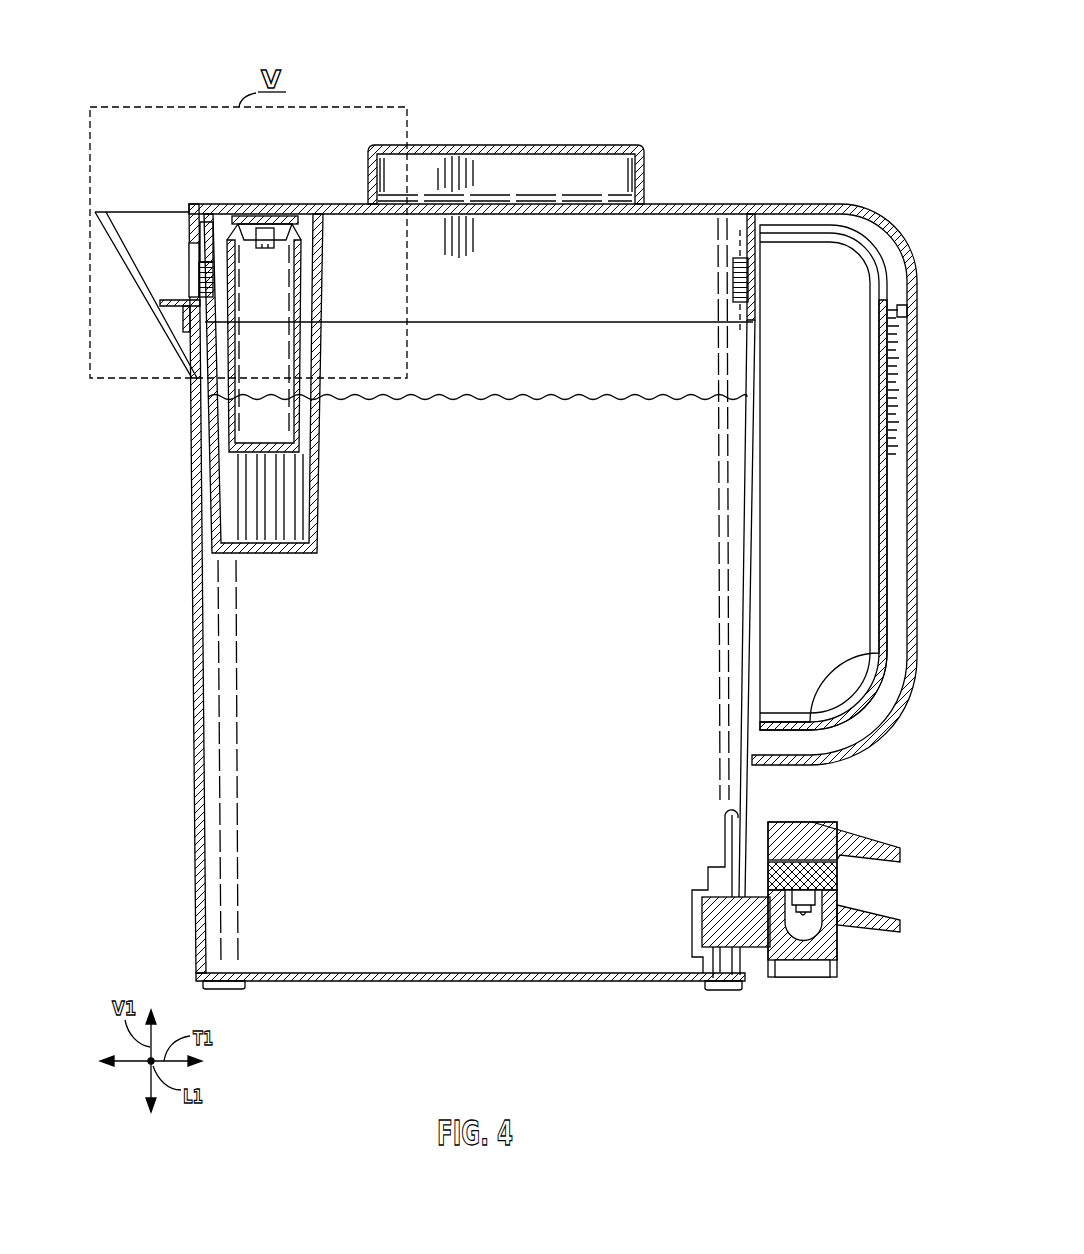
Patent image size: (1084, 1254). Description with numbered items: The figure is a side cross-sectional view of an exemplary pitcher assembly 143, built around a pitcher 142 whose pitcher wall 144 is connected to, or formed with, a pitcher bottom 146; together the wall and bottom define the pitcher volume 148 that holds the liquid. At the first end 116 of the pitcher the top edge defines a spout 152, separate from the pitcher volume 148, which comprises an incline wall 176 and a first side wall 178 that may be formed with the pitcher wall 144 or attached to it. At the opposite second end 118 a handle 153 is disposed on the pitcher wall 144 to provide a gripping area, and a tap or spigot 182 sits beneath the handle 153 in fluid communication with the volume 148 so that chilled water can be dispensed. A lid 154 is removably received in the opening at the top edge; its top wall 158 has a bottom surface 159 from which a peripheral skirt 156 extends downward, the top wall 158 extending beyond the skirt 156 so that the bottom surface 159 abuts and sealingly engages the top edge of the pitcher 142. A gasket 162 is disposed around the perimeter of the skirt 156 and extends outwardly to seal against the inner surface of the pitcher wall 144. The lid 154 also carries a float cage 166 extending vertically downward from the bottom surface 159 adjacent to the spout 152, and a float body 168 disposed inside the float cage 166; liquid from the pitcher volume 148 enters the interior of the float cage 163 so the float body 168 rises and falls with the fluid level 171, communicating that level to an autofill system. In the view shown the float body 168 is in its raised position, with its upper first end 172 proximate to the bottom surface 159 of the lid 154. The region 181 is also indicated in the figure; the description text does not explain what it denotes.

The pitcher assembly 143 is at (842, 126).
The lid assembly 181 is at (183, 54).
The pitcher wall 144 is at (190, 796).
The float cage 163 is at (752, 458).
The lid 154 is at (657, 200).
The handle 153 is at (920, 492).
The top wall 158 is at (598, 145).
The bottom surface 159 is at (330, 215).
The spout 152 is at (136, 212).
The first side wall 178 is at (139, 212).
The first end 116 is at (420, 409).
The float cage 166 is at (210, 497).
The float body 168 is at (290, 446).
The first end 172 is at (230, 226).
The incline wall 176 is at (180, 298).
The gasket 162 is at (198, 282).
The second end 118 is at (770, 300).
The peripheral skirt 156 is at (697, 290).
The fluid level 171 is at (622, 395).
The pitcher volume 148 is at (500, 608).
The pitcher 142 is at (762, 805).
The spigot 182 is at (852, 952).
The pitcher bottom 146 is at (650, 983).